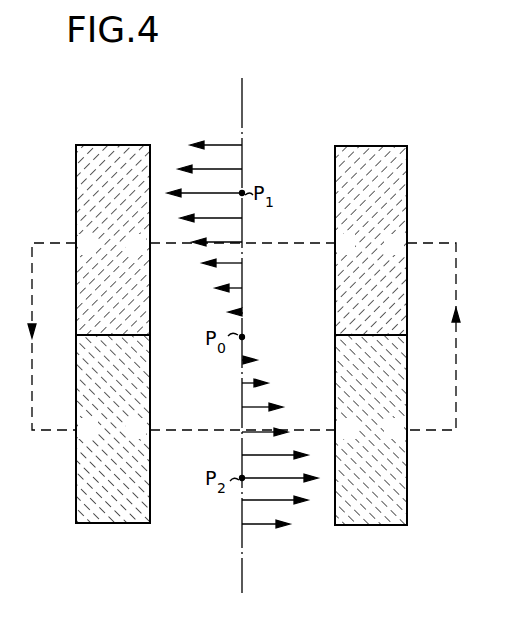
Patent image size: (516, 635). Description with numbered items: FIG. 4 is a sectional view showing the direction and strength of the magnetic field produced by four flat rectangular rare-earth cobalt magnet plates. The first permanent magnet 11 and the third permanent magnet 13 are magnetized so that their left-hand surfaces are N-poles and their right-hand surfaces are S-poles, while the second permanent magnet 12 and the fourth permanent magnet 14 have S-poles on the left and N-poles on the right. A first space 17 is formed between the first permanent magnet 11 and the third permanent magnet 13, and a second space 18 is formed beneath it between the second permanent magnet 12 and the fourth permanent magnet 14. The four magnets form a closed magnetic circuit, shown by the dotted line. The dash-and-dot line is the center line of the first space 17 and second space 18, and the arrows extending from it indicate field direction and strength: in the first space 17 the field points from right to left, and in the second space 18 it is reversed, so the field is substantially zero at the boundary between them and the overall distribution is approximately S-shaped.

The first permanent magnet 11 is at (407, 185).
The second permanent magnet 12 is at (403, 500).
The third permanent magnet 13 is at (76, 183).
The fourth permanent magnet 14 is at (76, 482).
The first space 17 is at (267, 158).
The second space 18 is at (201, 503).